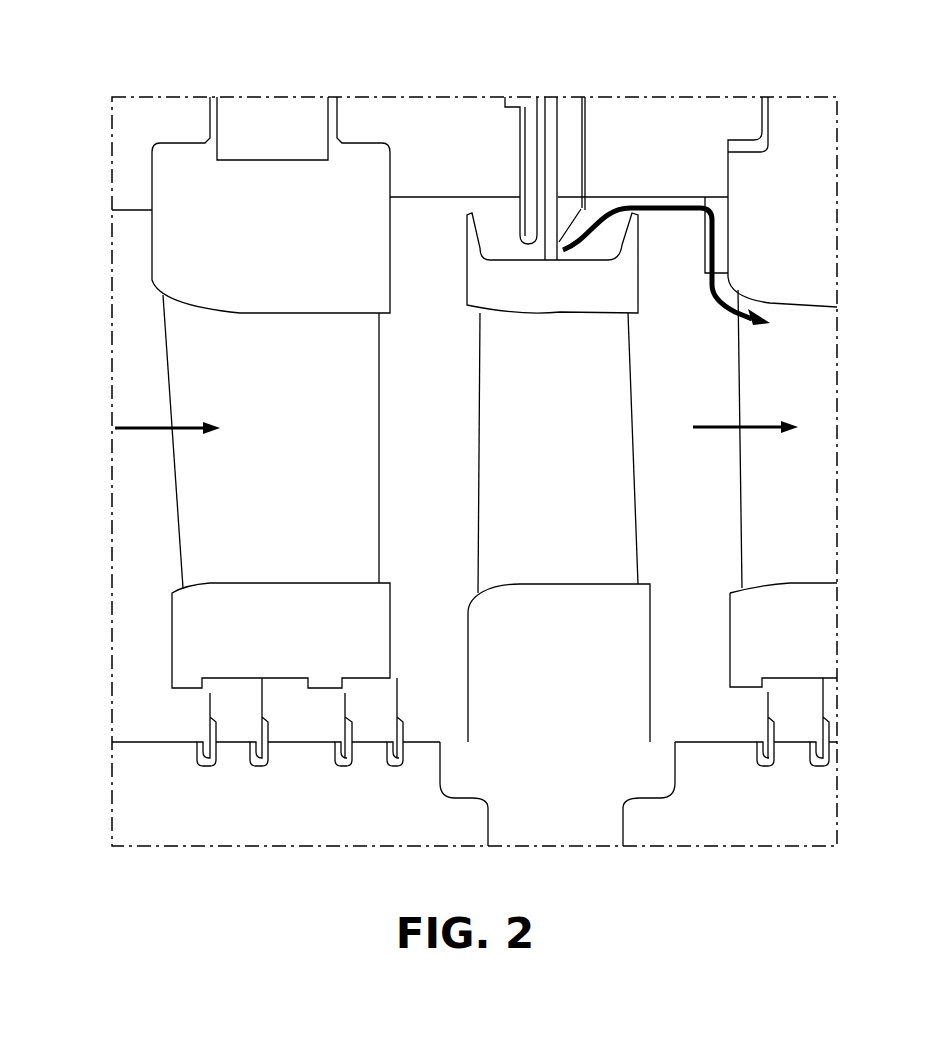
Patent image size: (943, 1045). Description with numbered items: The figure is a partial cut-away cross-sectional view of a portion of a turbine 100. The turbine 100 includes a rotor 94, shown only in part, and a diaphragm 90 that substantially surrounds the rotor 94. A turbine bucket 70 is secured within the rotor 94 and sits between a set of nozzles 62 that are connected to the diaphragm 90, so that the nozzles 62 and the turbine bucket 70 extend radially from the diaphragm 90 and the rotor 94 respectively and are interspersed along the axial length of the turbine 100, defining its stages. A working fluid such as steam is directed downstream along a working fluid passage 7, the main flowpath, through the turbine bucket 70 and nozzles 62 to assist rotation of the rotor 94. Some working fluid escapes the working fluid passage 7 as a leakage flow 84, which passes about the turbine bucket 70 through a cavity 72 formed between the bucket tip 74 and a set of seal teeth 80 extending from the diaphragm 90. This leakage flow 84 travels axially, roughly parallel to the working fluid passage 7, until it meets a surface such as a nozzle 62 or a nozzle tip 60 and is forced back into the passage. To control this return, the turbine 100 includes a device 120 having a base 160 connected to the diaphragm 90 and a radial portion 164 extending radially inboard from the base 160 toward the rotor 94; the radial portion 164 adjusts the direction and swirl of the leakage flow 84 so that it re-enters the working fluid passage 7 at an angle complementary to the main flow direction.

The turbine 100 is at (98, 76).
The nozzle tip 60 is at (268, 225).
The nozzle 62 is at (275, 464).
The turbine bucket 70 is at (534, 470).
The cavity 72 is at (496, 230).
The bucket tip 74 is at (537, 300).
The seal teeth 80 is at (556, 215).
The leakage flow 84 is at (676, 203).
The diaphragm 90 is at (627, 176).
The rotor 94 is at (186, 811).
The device 120 is at (742, 236).
The base 160 is at (712, 194).
The radial portion 164 is at (702, 258).
The working fluid passage 7 is at (456, 414).